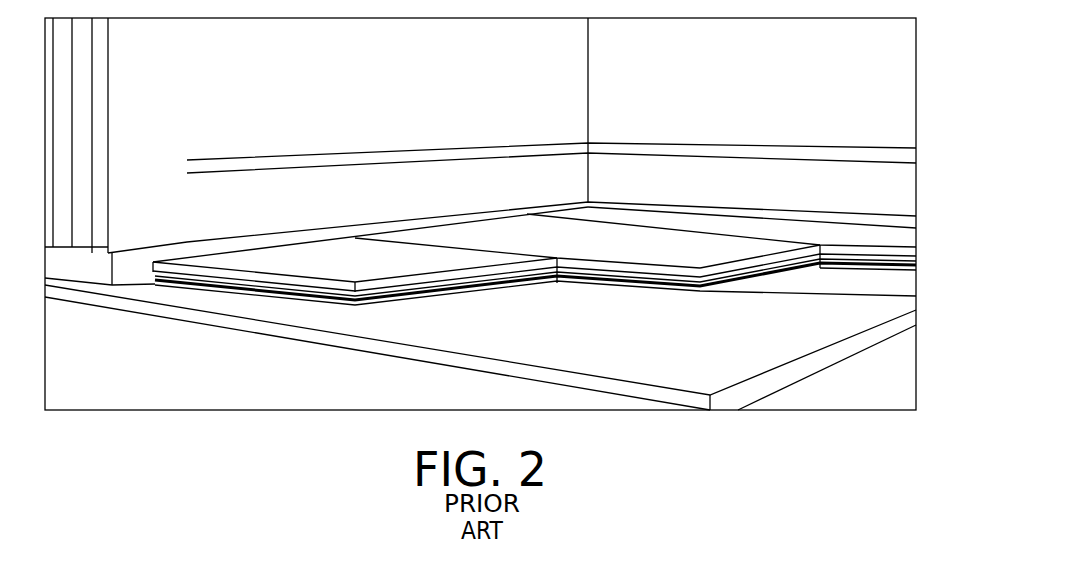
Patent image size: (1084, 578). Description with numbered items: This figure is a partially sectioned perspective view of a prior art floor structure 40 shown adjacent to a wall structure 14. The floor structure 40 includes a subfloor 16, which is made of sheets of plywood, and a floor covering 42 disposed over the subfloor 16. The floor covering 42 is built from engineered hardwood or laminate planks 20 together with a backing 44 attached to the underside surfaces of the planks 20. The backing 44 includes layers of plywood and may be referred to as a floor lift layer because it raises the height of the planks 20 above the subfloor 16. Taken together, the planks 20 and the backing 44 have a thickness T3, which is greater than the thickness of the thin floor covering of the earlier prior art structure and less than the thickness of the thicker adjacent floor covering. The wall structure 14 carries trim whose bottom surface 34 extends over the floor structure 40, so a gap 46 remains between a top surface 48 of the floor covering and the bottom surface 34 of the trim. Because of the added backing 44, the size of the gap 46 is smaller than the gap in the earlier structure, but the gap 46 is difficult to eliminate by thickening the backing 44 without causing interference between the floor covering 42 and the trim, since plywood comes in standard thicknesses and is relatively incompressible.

The wall structure 14 is at (470, 133).
The subfloor 16 is at (430, 325).
The planks 20 is at (575, 219).
The bottom surface 34 is at (248, 258).
The floor structure 40 is at (734, 221).
The floor covering 42 is at (584, 295).
The backing 44 is at (873, 268).
The gap 46 is at (331, 237).
The top surface 48 is at (383, 274).
The thickness T3 is at (660, 253).